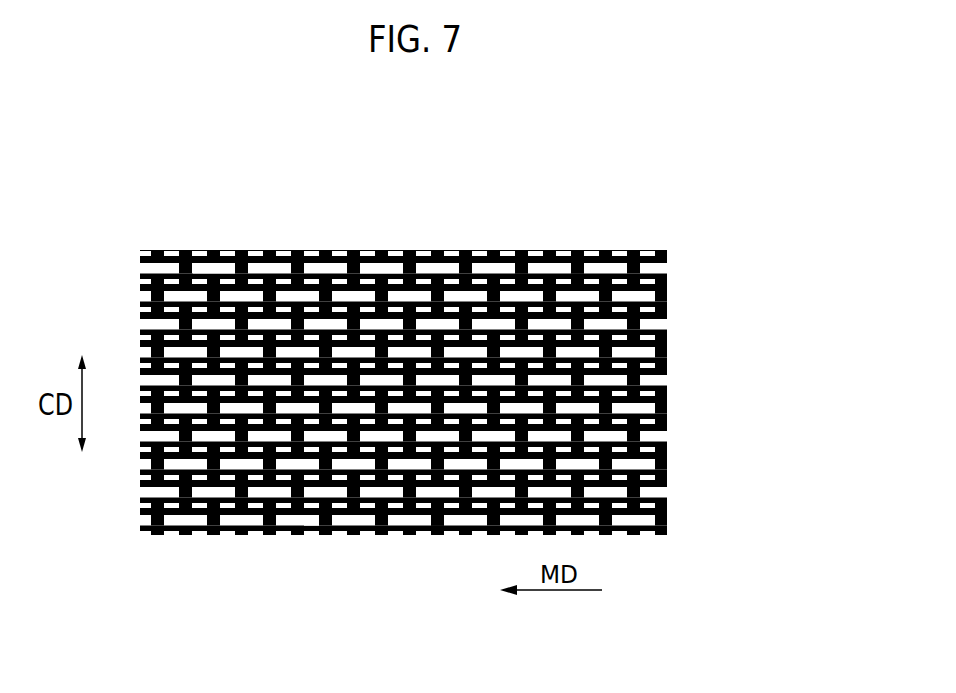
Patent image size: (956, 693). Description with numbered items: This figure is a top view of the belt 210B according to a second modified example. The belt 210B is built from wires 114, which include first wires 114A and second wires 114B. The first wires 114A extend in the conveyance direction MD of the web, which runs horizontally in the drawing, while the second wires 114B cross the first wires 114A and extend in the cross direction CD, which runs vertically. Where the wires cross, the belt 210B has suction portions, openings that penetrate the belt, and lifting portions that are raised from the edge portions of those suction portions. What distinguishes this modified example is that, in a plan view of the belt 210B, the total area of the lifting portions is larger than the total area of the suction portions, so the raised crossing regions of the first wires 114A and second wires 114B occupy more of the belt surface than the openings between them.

The belt 210B is at (549, 169).
The first wires 114A is at (316, 515).
The second wires 114B is at (437, 513).
The wires 114 is at (445, 597).